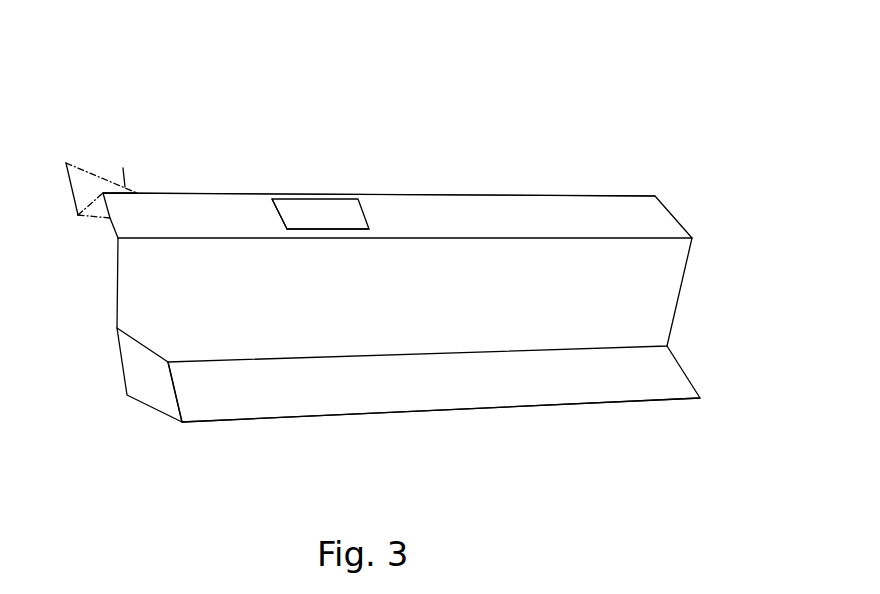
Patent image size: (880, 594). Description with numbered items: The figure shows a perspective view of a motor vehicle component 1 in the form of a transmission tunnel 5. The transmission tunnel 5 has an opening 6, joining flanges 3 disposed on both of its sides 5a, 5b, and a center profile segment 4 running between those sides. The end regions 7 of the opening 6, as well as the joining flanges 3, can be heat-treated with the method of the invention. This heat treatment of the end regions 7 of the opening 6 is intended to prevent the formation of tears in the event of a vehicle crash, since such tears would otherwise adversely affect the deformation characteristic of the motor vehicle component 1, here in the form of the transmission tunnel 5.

The motor vehicle component 1 is at (317, 83).
The joining flanges 3 is at (82, 183).
The center profile segment 4 is at (652, 290).
The transmission tunnel 5 is at (503, 222).
The side of the transmission tunnel 5a is at (315, 415).
The side of the transmission tunnel 5b is at (137, 192).
The opening 6 is at (335, 215).
The end regions 7 is at (323, 228).